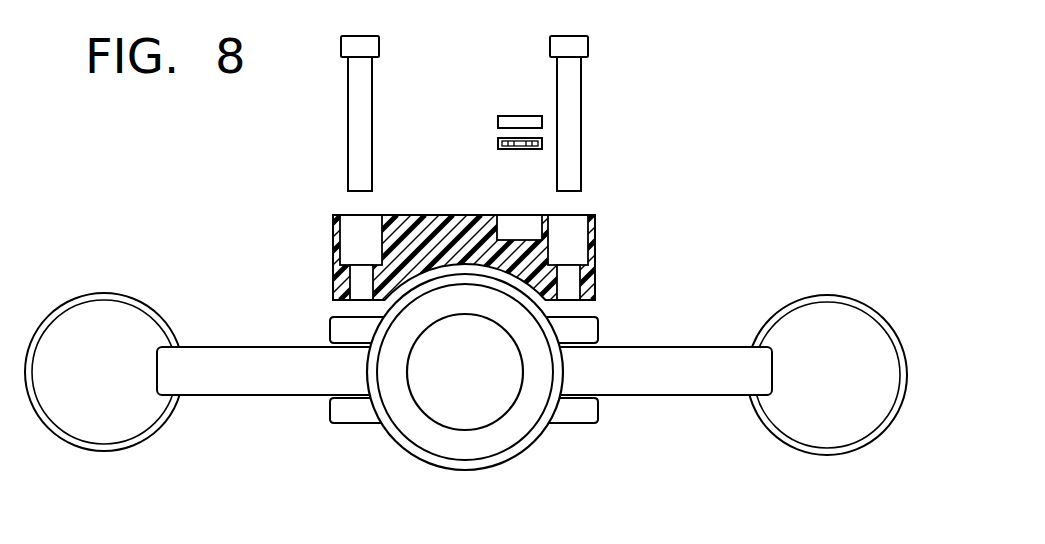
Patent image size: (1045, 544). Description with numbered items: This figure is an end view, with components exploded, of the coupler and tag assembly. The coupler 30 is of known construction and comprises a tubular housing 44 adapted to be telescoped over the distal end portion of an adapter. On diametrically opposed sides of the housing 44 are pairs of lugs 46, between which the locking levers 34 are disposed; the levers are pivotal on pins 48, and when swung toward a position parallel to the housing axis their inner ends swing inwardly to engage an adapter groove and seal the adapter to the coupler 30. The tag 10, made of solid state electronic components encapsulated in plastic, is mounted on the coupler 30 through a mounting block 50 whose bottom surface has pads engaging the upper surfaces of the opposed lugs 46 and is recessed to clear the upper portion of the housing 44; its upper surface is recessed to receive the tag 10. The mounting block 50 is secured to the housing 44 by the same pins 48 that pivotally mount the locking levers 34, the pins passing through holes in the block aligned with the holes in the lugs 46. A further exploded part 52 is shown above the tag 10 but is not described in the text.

The coupler 30 is at (246, 205).
The pins 48 is at (348, 95).
The washer plate 52 is at (513, 116).
The tag 10 is at (498, 143).
The mounting block 50 is at (595, 253).
The lugs 46 is at (330, 320).
The locking levers 34 is at (207, 347).
The tubular housing 44 is at (445, 469).